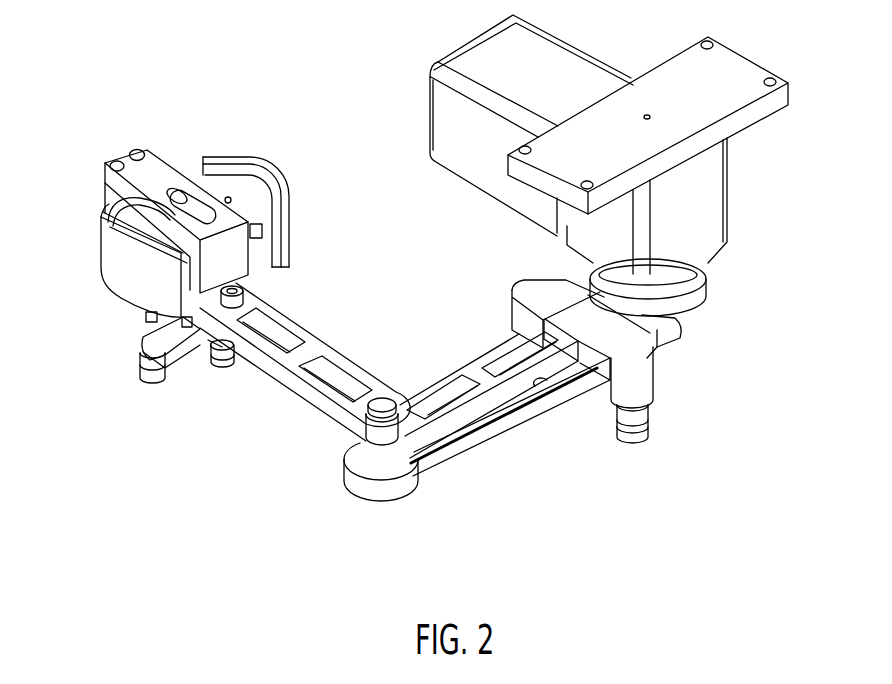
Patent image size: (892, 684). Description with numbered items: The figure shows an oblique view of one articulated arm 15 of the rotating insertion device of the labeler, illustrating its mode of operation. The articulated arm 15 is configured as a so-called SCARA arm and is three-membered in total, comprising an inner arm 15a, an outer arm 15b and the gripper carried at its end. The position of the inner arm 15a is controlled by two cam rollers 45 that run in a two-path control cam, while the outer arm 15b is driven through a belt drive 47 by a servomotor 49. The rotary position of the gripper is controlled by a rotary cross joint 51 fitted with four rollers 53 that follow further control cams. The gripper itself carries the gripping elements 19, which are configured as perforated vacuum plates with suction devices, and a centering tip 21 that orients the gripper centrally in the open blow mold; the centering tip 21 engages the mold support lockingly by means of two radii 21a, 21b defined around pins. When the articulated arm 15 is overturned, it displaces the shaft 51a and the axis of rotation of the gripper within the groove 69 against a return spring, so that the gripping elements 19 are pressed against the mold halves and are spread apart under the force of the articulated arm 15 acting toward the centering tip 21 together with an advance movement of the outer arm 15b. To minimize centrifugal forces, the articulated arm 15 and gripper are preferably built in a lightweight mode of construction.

The articulated arm 15 is at (405, 420).
The inner arm 15a is at (493, 410).
The outer arm 15b is at (293, 392).
The gripping elements 19 is at (260, 180).
The centering tip 21 is at (151, 186).
The radius 21a is at (103, 165).
The radius 21b is at (140, 148).
The cam rollers 45 is at (543, 386).
The belt drive 47 is at (470, 464).
The servomotor 49 is at (703, 211).
The rotary cross joint 51 is at (187, 352).
The shaft 51a is at (150, 320).
The rollers 53 is at (140, 375).
The groove 69 is at (176, 192).